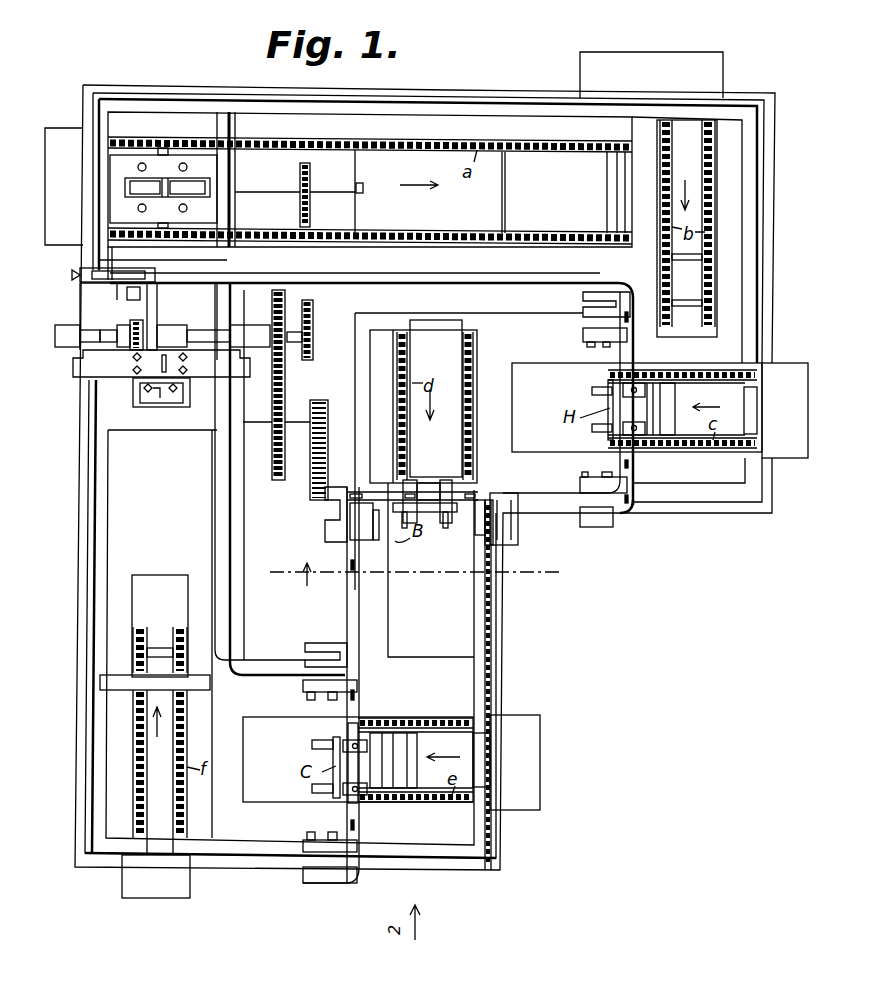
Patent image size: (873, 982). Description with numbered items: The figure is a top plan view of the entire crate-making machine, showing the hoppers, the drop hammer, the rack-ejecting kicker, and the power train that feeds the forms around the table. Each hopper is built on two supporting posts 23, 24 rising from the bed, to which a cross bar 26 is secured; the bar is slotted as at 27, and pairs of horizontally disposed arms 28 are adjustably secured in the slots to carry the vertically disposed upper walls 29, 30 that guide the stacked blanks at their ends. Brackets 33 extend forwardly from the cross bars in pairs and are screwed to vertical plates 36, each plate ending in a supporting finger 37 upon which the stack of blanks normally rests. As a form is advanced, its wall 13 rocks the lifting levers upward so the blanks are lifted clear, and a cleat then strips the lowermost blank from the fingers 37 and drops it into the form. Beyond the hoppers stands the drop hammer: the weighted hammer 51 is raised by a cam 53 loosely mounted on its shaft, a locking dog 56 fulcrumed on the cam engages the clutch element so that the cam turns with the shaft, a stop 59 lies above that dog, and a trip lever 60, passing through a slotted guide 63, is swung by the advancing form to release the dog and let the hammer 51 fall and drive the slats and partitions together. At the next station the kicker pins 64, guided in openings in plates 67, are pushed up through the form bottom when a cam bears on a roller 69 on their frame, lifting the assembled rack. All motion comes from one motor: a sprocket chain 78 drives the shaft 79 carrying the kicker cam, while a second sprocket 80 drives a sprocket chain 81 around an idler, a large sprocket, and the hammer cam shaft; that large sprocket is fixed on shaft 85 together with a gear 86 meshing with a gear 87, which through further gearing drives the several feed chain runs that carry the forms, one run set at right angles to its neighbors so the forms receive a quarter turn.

The wall 13 is at (560, 572).
The supporting post 23 is at (325, 525).
The supporting post 24 is at (518, 540).
The cross bar 26 is at (437, 500).
The slot 27 is at (480, 487).
The horizontal arm 28 is at (358, 535).
The upper wall 29 is at (377, 542).
The upper wall 30 is at (476, 522).
The bracket 33 is at (417, 483).
The vertical plate 36 is at (441, 517).
The supporting finger 37 is at (445, 530).
The weighted hammer 51 is at (182, 398).
The cam 53 is at (152, 310).
The locking dog 56 is at (60, 336).
The stop 59 is at (127, 292).
The trip lever 60 is at (97, 270).
The slotted guide 63 is at (150, 276).
The kicker pin 64 is at (138, 208).
The guide plate 67 is at (197, 213).
The roller 69 is at (164, 186).
The sprocket chain 78 is at (357, 213).
The shaft 79 is at (260, 187).
The second sprocket 80 is at (312, 360).
The sprocket chain 81 is at (284, 394).
The shaft 85 is at (257, 423).
The gear 86 is at (323, 400).
The gear 87 is at (313, 492).